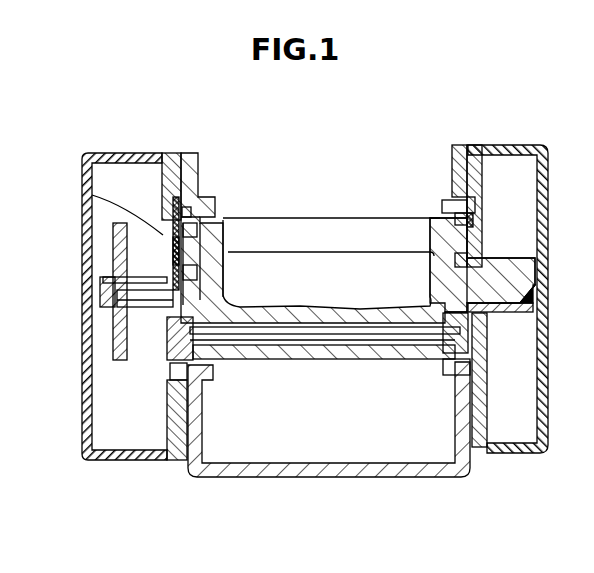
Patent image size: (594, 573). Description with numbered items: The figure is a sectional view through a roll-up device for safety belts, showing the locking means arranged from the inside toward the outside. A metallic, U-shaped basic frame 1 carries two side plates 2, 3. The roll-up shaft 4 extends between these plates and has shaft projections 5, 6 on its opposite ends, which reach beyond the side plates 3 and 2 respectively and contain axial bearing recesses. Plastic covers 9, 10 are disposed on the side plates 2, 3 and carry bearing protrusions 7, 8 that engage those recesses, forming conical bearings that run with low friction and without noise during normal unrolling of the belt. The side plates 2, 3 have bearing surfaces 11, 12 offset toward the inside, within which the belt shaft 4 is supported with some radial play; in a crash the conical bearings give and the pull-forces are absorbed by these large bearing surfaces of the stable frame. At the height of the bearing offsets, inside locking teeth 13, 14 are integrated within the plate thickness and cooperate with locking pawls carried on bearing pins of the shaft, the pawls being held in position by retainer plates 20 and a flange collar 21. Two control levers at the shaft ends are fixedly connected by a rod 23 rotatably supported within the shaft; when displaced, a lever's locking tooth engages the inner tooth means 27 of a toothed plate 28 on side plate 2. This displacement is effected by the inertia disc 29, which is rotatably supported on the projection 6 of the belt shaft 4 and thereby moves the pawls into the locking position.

The basic frame 1 is at (245, 480).
The side plate 2 is at (194, 165).
The side plate 3 is at (460, 165).
The roll-up shaft 4 is at (365, 362).
The shaft projection 5 is at (497, 280).
The shaft projection 6 is at (140, 300).
The bearing protrusion 7 is at (100, 295).
The bearing protrusion 8 is at (530, 288).
The cover 9 is at (84, 230).
The cover 10 is at (547, 158).
The bearing surface 11 is at (192, 210).
The bearing surface 12 is at (450, 207).
The inside locking teeth 13 is at (163, 207).
The inside locking teeth 14 is at (467, 222).
The retainer plate 20 is at (84, 188).
The flange collar 21 is at (480, 332).
The rod 23 is at (292, 337).
The inner tooth means 27 is at (175, 377).
The toothed plate 28 is at (173, 165).
The inertia disc 29 is at (122, 363).